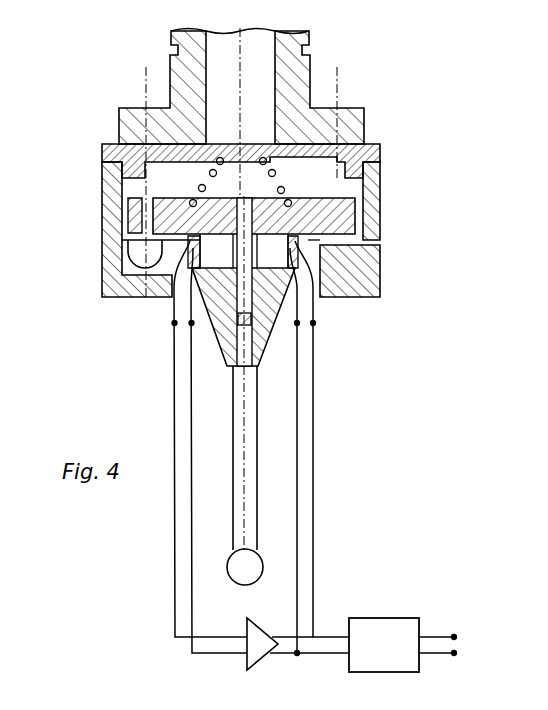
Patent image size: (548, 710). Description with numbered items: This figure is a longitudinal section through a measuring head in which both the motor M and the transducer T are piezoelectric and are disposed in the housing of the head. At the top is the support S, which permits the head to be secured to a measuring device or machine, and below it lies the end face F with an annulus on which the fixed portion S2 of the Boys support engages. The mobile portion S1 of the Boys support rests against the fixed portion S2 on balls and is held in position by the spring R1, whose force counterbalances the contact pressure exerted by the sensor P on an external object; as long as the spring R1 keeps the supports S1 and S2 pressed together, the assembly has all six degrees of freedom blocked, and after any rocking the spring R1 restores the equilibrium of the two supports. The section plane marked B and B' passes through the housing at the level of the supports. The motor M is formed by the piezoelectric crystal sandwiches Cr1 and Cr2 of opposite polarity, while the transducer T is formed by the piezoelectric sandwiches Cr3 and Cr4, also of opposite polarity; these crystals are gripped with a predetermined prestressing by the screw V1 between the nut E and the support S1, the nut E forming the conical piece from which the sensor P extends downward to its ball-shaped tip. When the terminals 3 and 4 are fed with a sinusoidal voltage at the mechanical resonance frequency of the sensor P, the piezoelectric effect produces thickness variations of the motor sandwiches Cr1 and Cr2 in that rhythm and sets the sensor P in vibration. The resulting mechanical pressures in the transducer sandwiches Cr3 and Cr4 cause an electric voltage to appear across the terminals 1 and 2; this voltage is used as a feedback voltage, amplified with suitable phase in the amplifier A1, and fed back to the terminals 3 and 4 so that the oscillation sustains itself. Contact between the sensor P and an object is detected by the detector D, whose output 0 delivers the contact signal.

The support S is at (243, 164).
The end face F is at (282, 142).
The mobile portion of the Boys support S1 is at (294, 200).
The fixed portion of the Boys support S2 is at (382, 277).
The section line B is at (66, 241).
The section line B' is at (409, 239).
The motor piezoelectric crystal sandwich Cr1 is at (362, 274).
The motor piezoelectric crystal sandwich Cr2 is at (347, 284).
The transducer piezoelectric sandwich Cr3 is at (128, 276).
The transducer piezoelectric sandwich Cr4 is at (144, 286).
The transducer T is at (161, 286).
The motor M is at (241, 246).
The screw V1 is at (258, 188).
The spring R1 is at (288, 182).
The nut E is at (243, 374).
The sensor P is at (256, 509).
The terminal 1 is at (218, 450).
The terminal 2 is at (202, 439).
The terminal 3 is at (322, 446).
The terminal 4 is at (291, 460).
The amplifier A1 is at (298, 644).
The detector D is at (384, 645).
The output terminals 0 is at (448, 645).